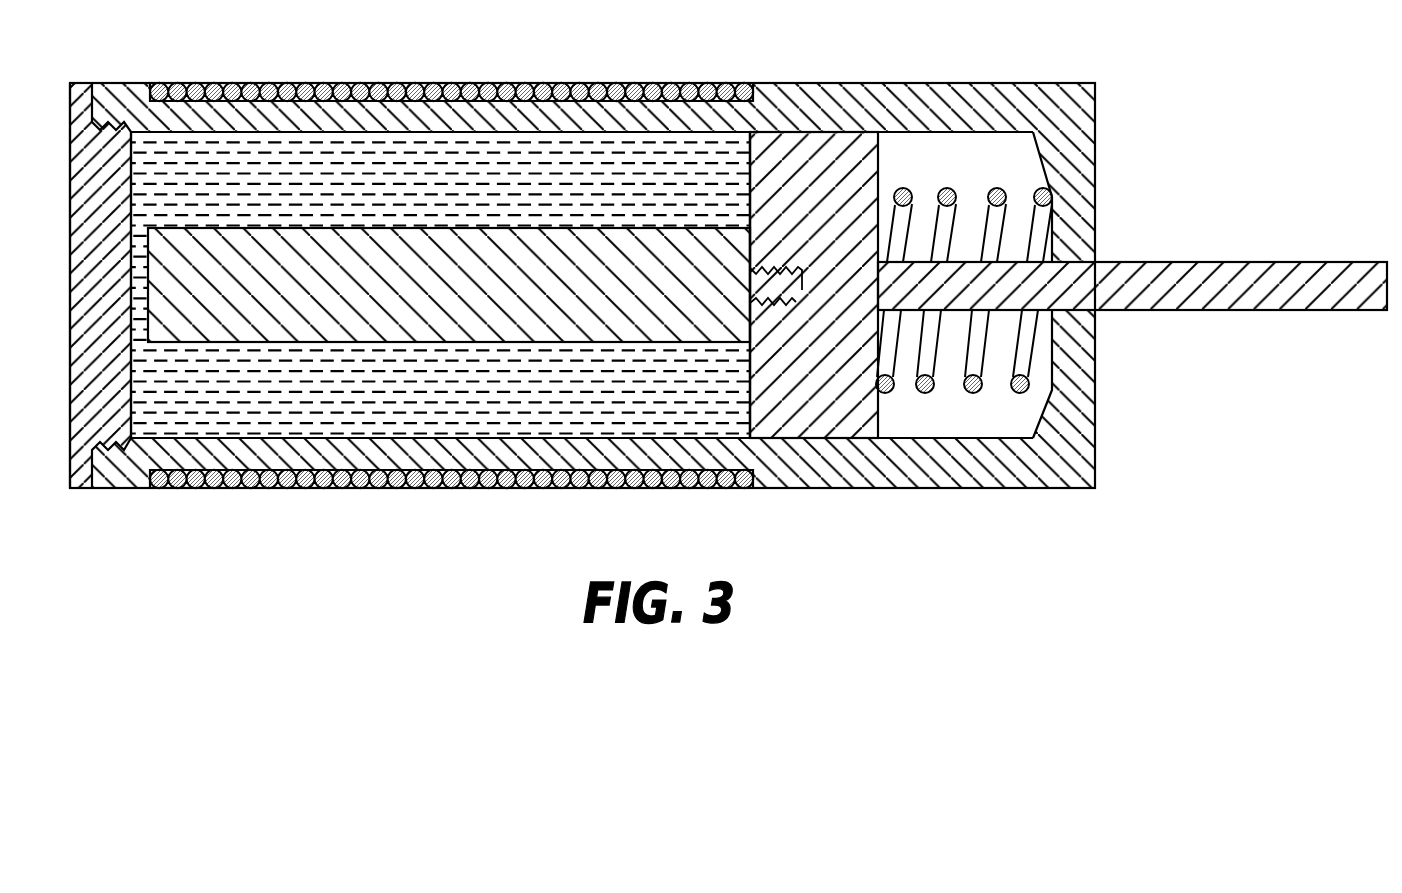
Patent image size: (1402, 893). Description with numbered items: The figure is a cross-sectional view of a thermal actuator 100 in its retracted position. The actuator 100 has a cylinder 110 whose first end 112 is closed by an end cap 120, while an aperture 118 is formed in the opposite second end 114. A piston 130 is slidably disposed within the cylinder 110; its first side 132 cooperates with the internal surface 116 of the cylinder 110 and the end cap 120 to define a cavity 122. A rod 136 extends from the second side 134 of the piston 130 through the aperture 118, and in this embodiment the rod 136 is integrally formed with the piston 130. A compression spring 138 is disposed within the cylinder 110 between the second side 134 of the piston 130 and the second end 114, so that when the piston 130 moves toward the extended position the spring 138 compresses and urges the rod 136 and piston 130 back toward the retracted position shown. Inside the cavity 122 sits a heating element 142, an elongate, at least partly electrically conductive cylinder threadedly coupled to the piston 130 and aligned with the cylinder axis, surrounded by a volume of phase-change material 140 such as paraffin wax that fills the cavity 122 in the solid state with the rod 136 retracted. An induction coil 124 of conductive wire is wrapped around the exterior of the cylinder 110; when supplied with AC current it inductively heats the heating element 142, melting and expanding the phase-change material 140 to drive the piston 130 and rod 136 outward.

The thermal actuator 100 is at (1137, 53).
The cylinder 110 is at (620, 286).
The first end 112 is at (120, 83).
The second end 114 is at (1097, 118).
The internal surface 116 is at (245, 432).
The aperture 118 is at (1078, 268).
The end cap 120 is at (70, 280).
The cavity 122 is at (488, 398).
The induction coil 124 is at (198, 83).
The piston 130 is at (825, 160).
The first side 132 is at (738, 155).
The second side 134 is at (893, 150).
The rod 136 is at (1288, 262).
The compression spring 138 is at (1030, 352).
The phase-change material 140 is at (297, 158).
The heating element 142 is at (440, 226).